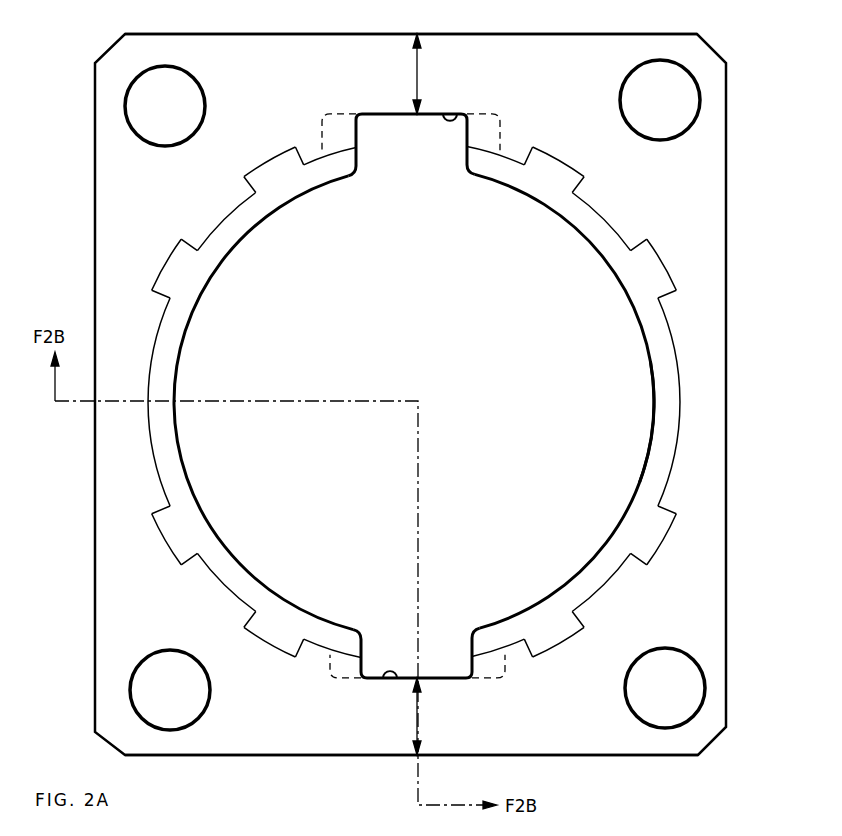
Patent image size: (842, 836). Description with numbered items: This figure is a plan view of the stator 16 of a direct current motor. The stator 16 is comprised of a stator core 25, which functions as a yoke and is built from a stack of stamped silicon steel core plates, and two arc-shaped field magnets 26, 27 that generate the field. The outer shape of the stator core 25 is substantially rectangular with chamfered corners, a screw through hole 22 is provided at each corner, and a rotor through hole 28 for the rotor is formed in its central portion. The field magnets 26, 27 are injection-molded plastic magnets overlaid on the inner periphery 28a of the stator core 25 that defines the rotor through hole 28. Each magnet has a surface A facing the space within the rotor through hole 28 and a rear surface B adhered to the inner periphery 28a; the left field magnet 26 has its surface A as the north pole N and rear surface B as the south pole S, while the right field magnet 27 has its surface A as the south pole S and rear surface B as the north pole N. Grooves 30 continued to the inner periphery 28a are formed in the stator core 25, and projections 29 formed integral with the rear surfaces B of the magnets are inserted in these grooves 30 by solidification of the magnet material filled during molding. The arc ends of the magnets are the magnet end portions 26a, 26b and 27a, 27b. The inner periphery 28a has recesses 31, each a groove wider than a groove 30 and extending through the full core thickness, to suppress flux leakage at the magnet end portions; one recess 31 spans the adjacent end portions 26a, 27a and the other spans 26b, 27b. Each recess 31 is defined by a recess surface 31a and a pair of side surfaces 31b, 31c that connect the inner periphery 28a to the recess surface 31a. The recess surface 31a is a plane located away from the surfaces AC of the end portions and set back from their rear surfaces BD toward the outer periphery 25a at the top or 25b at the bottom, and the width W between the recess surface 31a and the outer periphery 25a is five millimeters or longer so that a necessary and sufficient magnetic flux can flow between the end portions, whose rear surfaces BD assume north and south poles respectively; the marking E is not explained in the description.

The stator 16 is at (95, 553).
The screw through hole 22 is at (126, 128).
The stator core 25 is at (108, 206).
The outer periphery of the stator core 25a is at (428, 33).
The outer periphery of the stator core 25b is at (430, 757).
The field magnet 26 is at (162, 450).
The magnet end portion 26a is at (320, 185).
The magnet end portion 26b is at (316, 646).
The field magnet 27 is at (688, 385).
The magnet end portion 27a is at (486, 167).
The magnet end portion 27b is at (487, 638).
The rotor through hole 28 is at (520, 420).
The inner periphery of the stator core 28a is at (640, 473).
The projection 29 is at (175, 270).
The groove 30 is at (157, 278).
The recess 31 is at (397, 132).
The recess surface 31a is at (468, 116).
The side surface 31b is at (360, 114).
The side surface 31c is at (488, 113).
The rear surface of magnet end portion BD is at (325, 148).
The surface of magnet end portion AC is at (354, 177).
The edge E is at (358, 157).
The surface A is at (190, 323).
The rear surface B is at (158, 482).
The south pole S is at (376, 416).
The north pole N is at (446, 416).
The width W is at (428, 394).